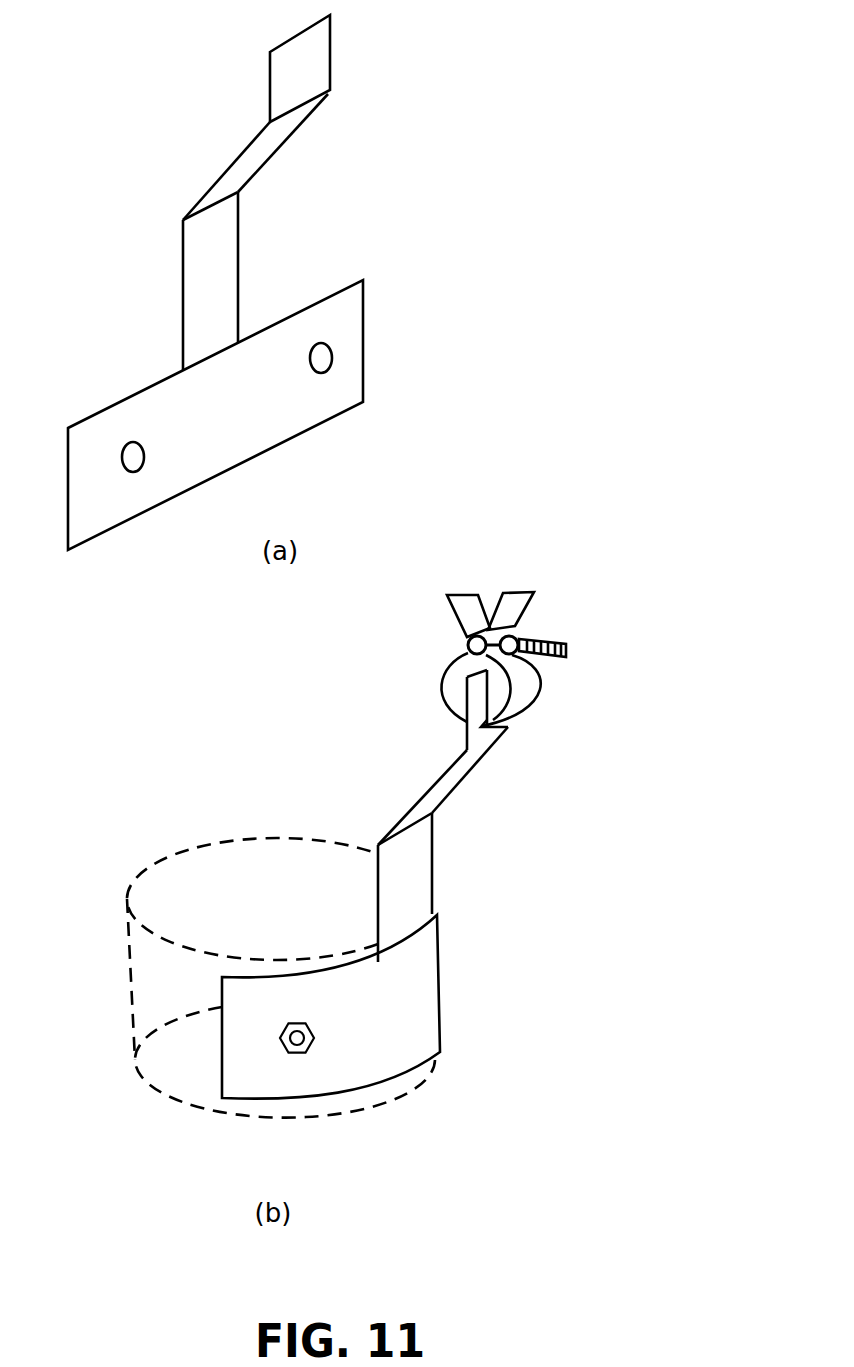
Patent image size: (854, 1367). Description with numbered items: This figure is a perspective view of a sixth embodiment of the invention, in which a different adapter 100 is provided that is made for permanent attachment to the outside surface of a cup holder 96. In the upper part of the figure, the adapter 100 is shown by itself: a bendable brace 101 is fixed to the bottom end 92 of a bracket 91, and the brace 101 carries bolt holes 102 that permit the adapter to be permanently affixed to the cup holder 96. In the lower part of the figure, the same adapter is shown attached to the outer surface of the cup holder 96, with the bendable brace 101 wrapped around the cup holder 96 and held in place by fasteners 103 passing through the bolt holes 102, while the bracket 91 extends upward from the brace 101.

The adapter 100 is at (377, 609).
The bracket 91 is at (222, 240).
The bottom end 92 is at (313, 742).
The bendable brace 101 is at (337, 318).
The bolt holes 102 is at (145, 457).
The cup holder 96 is at (128, 975).
The fasteners 103 is at (313, 1037).